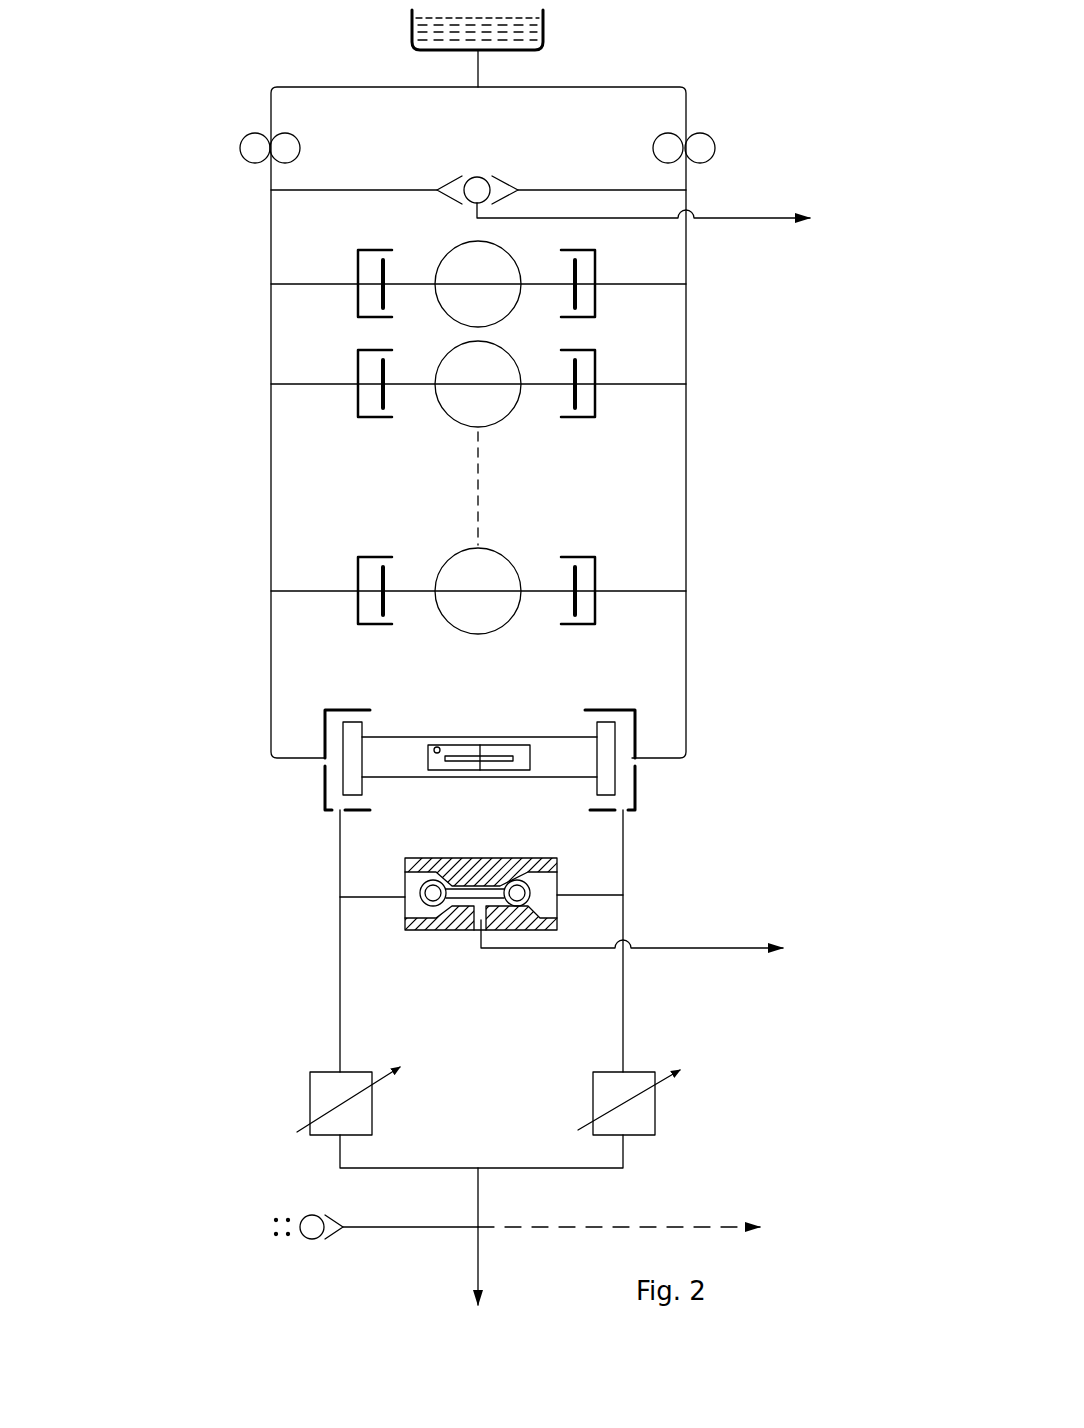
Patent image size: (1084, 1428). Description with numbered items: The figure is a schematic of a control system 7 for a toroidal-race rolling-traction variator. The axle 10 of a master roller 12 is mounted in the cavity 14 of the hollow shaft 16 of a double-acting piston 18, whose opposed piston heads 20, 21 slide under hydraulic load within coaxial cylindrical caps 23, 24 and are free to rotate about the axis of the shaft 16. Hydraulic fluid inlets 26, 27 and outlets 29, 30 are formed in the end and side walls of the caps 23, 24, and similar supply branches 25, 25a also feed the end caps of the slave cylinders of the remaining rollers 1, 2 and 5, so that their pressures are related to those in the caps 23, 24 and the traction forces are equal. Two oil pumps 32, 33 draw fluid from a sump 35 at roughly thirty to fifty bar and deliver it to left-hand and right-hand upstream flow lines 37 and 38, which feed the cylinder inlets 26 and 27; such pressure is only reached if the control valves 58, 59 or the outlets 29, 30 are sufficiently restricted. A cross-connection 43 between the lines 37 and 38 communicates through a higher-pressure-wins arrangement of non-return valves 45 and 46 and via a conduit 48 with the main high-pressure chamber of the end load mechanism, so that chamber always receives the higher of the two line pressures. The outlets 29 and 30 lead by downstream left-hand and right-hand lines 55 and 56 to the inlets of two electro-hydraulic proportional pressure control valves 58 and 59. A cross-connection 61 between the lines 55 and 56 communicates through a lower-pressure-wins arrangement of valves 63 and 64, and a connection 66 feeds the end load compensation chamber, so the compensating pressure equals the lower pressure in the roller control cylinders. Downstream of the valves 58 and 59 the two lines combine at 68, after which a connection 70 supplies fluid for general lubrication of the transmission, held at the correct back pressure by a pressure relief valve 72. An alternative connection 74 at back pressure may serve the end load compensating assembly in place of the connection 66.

The control system 7 is at (594, 50).
The sump 35 is at (412, 30).
The oil pump 32 is at (300, 130).
The oil pump 33 is at (652, 134).
The cross-connection 43 is at (318, 192).
The non-return valve 45 is at (452, 182).
The non-return valve 46 is at (500, 182).
The conduit 48 is at (764, 221).
The left-hand upstream flow line 37 is at (271, 332).
The right-hand upstream flow line 38 is at (686, 328).
The roller 1 is at (456, 256).
The roller 2 is at (458, 358).
The roller 5 is at (458, 566).
The supply branch 25 is at (312, 282).
The supply branch 25a is at (632, 282).
The double-acting piston 18 is at (592, 672).
The cylindrical cap 23 is at (340, 708).
The cylindrical cap 24 is at (625, 708).
The piston head 20 is at (358, 786).
The piston head 21 is at (600, 786).
The hollow shaft 16 is at (395, 745).
The axle 10 is at (480, 750).
The master roller 12 is at (500, 748).
The cavity 14 is at (437, 747).
The hydraulic fluid inlet 26 is at (318, 765).
The hydraulic fluid inlet 27 is at (642, 767).
The hydraulic fluid outlet 29 is at (332, 818).
The hydraulic fluid outlet 30 is at (628, 818).
The cross-connection 61 is at (360, 895).
The downstream left-hand line 55 is at (340, 974).
The downstream right-hand line 56 is at (623, 920).
The valve 63 is at (428, 878).
The valve 64 is at (530, 880).
The connection 66 is at (704, 950).
The electro-hydraulic proportional pressure control valve 58 is at (310, 1090).
The electro-hydraulic proportional pressure control valve 59 is at (655, 1108).
The junction 68 is at (478, 1172).
The connection 70 is at (481, 1200).
The pressure relief valve 72 is at (292, 1206).
The alternative connection 74 is at (716, 1224).